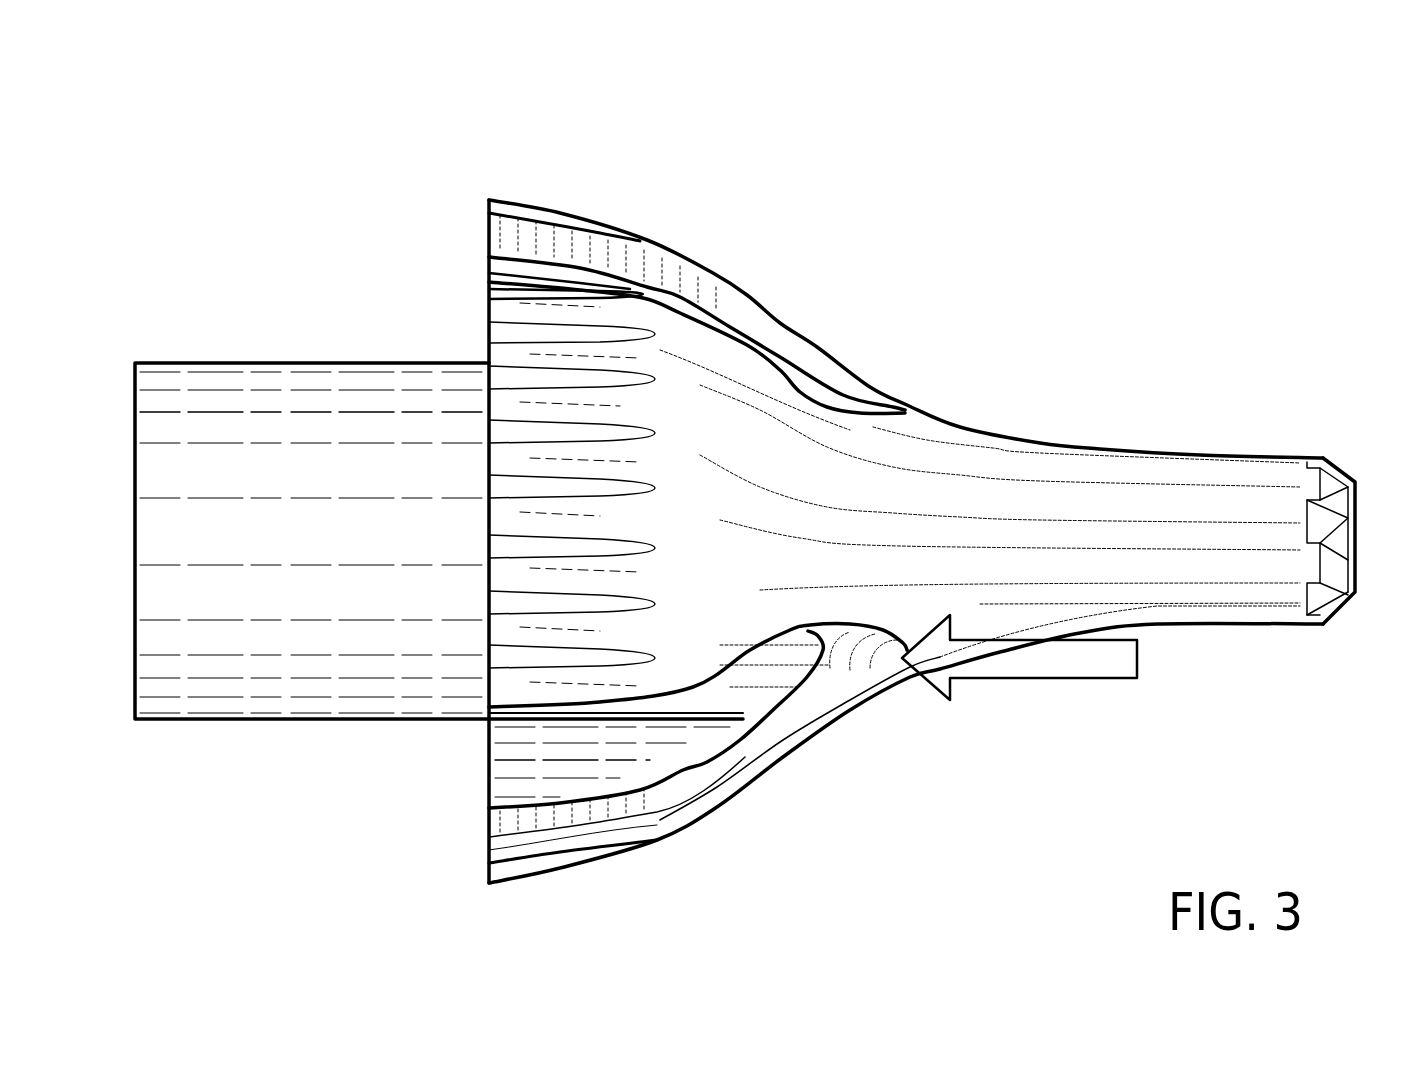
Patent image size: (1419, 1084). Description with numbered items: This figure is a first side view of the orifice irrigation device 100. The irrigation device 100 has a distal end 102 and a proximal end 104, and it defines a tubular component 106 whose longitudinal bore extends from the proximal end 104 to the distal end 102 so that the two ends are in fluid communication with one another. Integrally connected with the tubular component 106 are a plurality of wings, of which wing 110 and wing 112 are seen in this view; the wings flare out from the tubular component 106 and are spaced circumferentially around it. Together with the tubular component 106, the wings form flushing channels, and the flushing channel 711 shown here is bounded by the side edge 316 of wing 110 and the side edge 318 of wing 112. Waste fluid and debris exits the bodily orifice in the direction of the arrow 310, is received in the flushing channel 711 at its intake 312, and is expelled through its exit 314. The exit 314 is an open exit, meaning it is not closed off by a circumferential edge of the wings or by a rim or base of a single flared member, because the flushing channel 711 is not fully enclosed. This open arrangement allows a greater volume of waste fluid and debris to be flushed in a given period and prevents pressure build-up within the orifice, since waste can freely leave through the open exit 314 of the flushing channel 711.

The orifice irrigation device 100 is at (938, 155).
The distal end 102 is at (1357, 488).
The proximal end 104 is at (135, 393).
The tubular component 106 is at (327, 424).
The wing 110 is at (690, 830).
The wing 112 is at (688, 512).
The arrow 310 is at (1023, 668).
The intake 312 is at (840, 673).
The exit 314 is at (515, 750).
The side edge 316 is at (705, 778).
The side edge 318 is at (693, 688).
The flushing channel 711 is at (573, 783).